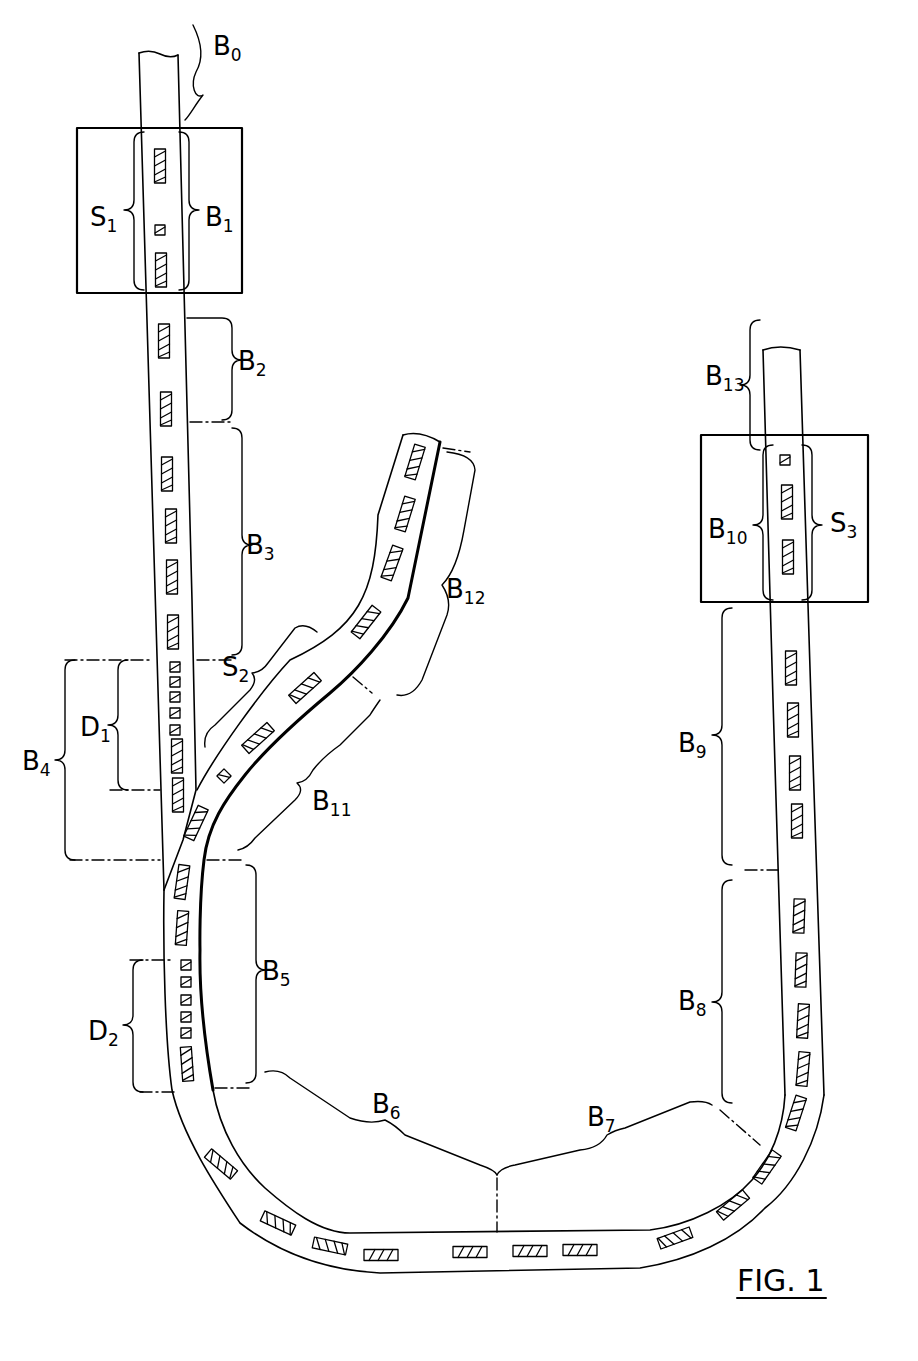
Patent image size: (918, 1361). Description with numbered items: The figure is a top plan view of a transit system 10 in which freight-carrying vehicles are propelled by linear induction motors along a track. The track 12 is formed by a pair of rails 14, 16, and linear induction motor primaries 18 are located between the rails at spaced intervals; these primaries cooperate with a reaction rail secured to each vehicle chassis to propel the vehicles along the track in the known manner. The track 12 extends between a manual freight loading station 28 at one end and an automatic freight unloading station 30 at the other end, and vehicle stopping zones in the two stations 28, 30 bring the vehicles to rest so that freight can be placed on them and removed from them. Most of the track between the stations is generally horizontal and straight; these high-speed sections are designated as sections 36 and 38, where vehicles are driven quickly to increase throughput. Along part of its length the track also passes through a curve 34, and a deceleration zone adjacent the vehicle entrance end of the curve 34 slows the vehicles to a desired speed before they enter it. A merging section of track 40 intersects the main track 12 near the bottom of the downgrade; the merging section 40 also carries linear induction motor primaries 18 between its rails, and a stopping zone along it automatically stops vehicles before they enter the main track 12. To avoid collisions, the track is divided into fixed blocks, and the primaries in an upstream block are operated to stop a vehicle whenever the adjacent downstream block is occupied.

The transit system 10 is at (586, 348).
The track 12 is at (141, 556).
The rail 14 is at (146, 360).
The rail 16 is at (230, 318).
The linear induction motor primaries 18 is at (173, 470).
The manual freight loading station 28 is at (250, 232).
The automatic freight unloading station 30 is at (694, 561).
The curve 34 is at (258, 1250).
The horizontal straight track section 36 is at (303, 524).
The horizontal straight track section 38 is at (693, 840).
The merging section of track 40 is at (368, 474).